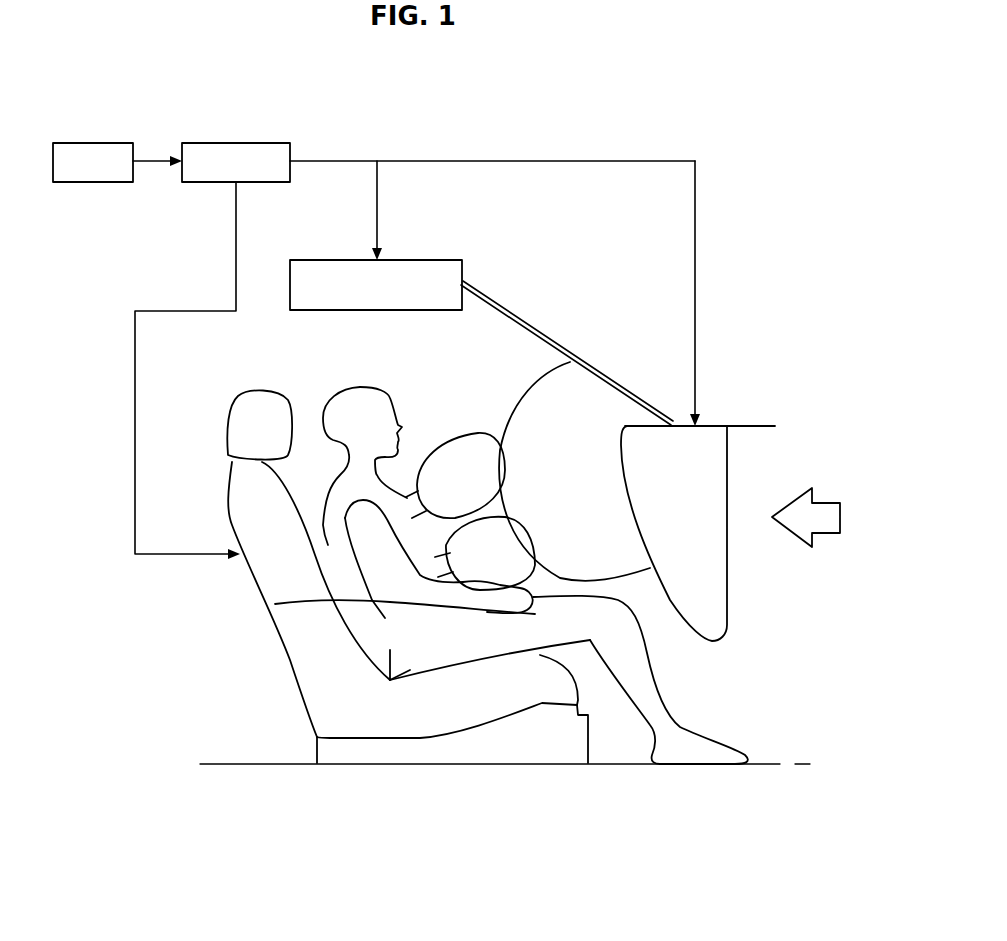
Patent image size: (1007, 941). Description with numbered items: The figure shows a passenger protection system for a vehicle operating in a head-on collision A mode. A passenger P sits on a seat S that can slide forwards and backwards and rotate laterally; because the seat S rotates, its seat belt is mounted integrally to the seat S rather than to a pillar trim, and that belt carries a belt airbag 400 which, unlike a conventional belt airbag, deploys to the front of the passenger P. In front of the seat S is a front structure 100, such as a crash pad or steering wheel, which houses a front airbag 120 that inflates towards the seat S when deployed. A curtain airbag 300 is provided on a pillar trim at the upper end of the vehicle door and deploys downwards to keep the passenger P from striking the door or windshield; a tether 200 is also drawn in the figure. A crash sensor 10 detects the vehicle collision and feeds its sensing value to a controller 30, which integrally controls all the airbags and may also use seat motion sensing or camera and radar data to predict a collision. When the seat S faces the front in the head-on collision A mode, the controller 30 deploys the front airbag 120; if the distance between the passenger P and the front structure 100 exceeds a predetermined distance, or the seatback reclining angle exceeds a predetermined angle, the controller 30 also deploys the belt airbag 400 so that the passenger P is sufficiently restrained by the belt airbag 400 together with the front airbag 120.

The crash sensor 10 is at (104, 143).
The controller 30 is at (255, 143).
The curtain airbag 300 is at (448, 260).
The tether 200 is at (512, 313).
The front airbag 120 is at (591, 412).
The front structure 100 is at (712, 466).
The belt airbag 400 is at (483, 569).
The seat S is at (312, 653).
The passenger P is at (435, 637).
The head-on collision A is at (828, 534).